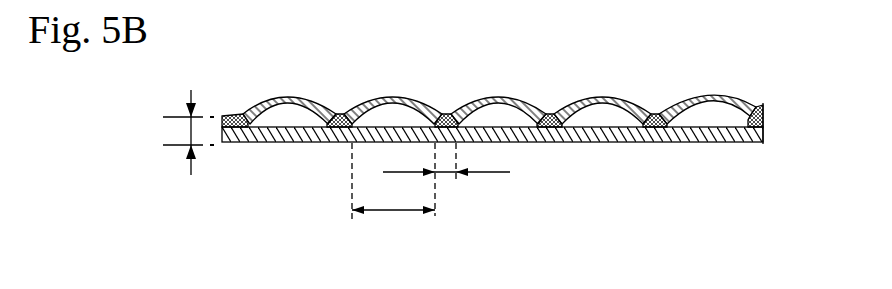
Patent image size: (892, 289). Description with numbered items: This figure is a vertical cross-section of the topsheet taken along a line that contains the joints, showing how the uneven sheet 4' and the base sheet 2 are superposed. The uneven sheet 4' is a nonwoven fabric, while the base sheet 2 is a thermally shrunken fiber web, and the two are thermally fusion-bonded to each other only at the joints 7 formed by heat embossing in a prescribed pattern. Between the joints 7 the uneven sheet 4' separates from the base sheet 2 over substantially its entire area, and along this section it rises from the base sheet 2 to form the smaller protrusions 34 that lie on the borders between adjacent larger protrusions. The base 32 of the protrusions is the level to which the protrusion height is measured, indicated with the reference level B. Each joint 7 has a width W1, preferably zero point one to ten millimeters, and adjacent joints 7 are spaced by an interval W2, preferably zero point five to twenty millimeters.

The base sheet 2 is at (268, 127).
The base 32 is at (231, 116).
The joint 7 is at (342, 114).
The smaller protrusion 34 is at (392, 97).
The uneven sheet 4' is at (765, 94).
The base level for height measurement B is at (184, 127).
The width of joint W1 is at (440, 178).
The interval between adjacent joints W2 is at (393, 190).